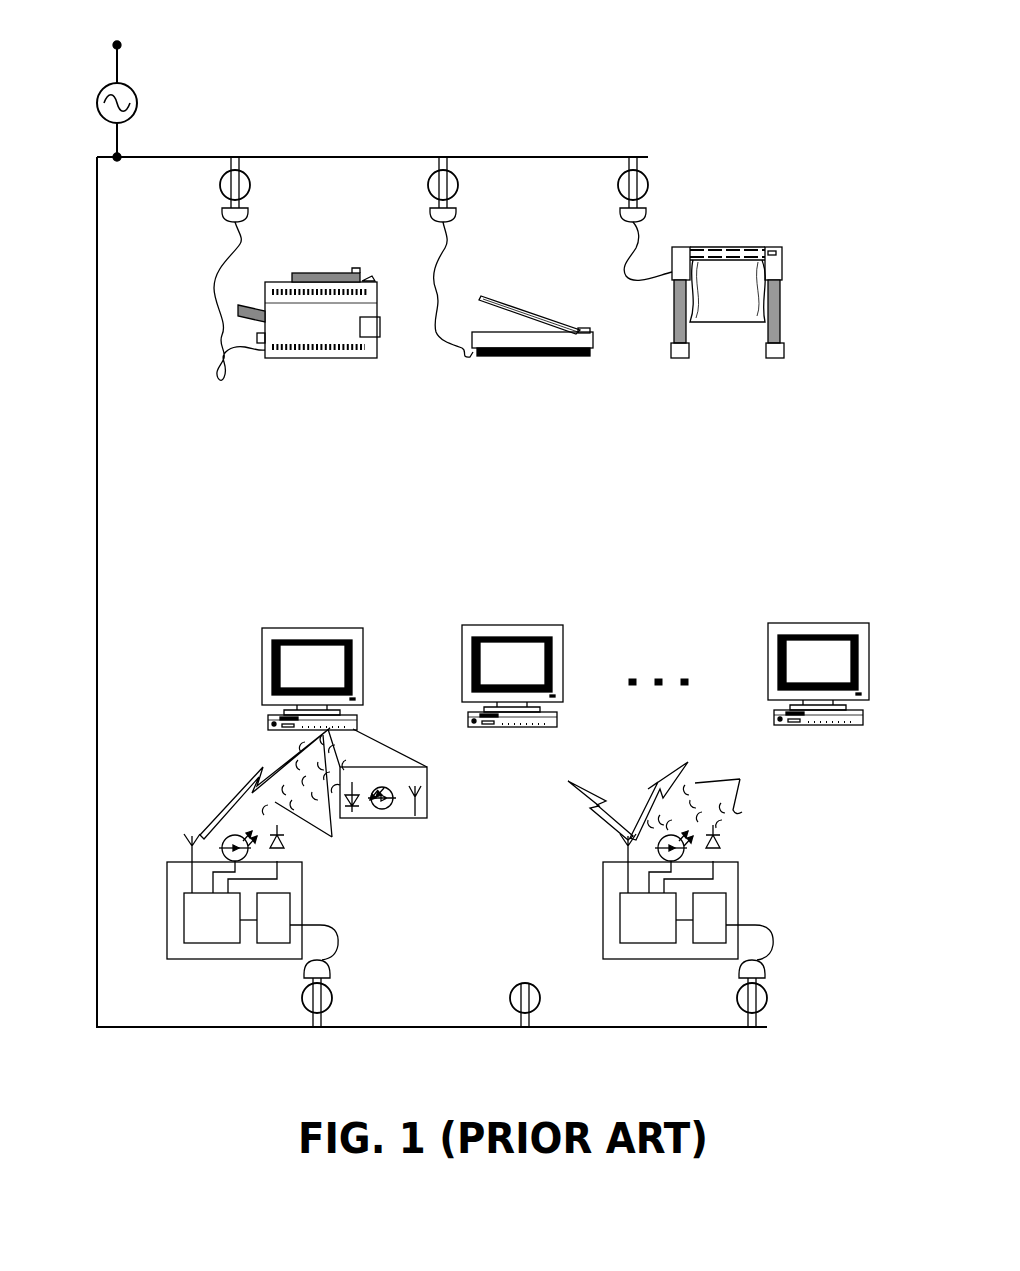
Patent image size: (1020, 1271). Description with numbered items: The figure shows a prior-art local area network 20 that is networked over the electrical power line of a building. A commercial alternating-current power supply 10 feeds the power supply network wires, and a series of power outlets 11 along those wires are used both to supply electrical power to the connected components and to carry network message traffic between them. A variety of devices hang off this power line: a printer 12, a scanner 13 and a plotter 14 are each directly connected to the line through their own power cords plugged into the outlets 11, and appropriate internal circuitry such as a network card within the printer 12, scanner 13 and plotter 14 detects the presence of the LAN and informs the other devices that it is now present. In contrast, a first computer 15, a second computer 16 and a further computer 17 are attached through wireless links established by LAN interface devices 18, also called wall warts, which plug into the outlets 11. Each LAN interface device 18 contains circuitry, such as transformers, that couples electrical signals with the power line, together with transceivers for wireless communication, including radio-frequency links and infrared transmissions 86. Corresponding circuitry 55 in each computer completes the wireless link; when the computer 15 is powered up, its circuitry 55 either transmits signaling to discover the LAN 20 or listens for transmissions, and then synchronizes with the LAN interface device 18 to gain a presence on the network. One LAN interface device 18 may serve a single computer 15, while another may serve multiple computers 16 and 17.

The alternating-current power supply 10 is at (130, 85).
The network 20 is at (476, 70).
The power outlets 11 is at (440, 155).
The printer 12 is at (278, 280).
The scanner 13 is at (520, 305).
The plotter 14 is at (707, 247).
The computer 15 is at (262, 680).
The computer 16 is at (462, 677).
The computer 17 is at (768, 675).
The LAN interface device 18 is at (603, 892).
The infrared transmissions 86 is at (521, 796).
The internal circuitry 55 is at (438, 790).